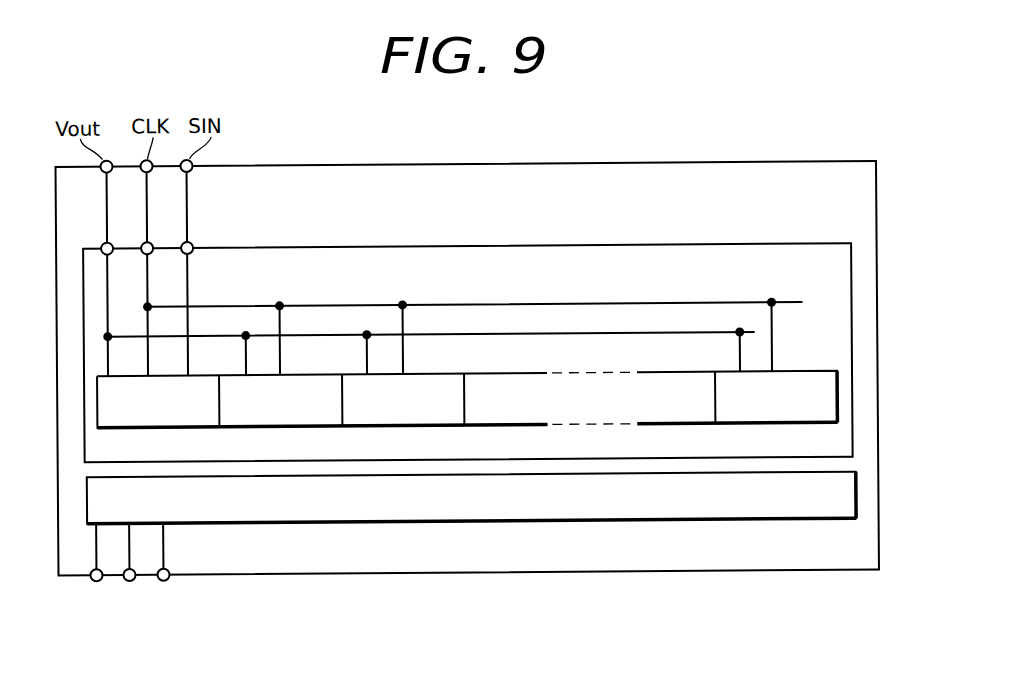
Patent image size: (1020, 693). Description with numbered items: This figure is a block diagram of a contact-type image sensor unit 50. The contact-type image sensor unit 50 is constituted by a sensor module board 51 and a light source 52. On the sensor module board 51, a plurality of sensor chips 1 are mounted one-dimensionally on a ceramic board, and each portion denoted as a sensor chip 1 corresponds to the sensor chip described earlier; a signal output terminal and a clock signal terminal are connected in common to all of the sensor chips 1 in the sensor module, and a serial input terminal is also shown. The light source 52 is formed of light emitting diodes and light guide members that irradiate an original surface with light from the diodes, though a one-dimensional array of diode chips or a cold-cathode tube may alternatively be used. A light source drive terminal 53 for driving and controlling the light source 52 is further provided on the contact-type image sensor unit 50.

The sensor chip 1 is at (192, 413).
The contact-type image sensor unit 50 is at (686, 163).
The sensor module board 51 is at (686, 245).
The light source 52 is at (637, 522).
The light source drive terminal 53 is at (175, 585).